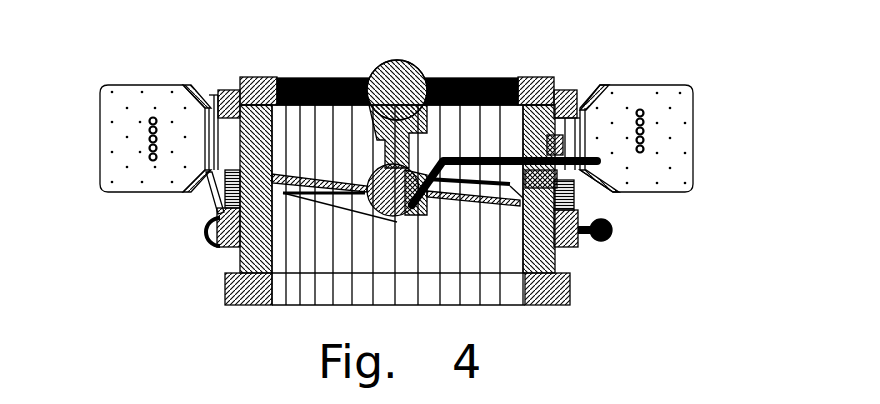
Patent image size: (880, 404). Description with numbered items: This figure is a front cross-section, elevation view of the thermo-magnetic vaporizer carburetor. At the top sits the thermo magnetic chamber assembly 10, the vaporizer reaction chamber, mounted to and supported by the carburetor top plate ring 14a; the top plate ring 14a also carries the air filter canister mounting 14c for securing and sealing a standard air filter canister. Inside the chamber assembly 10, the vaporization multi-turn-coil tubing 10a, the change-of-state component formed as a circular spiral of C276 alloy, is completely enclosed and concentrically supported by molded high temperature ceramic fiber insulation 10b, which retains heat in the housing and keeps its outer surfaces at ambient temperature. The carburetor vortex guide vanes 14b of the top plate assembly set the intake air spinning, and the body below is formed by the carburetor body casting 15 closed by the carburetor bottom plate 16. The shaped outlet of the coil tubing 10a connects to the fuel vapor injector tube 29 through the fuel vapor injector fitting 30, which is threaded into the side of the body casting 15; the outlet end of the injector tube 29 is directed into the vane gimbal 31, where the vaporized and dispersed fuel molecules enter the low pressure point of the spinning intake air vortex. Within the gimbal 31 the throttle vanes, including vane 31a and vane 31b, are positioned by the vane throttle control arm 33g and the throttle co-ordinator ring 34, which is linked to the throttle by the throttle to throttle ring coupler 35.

The thermo magnetic chamber assembly 10 is at (688, 84).
The multi-turn-coil tubing 10a is at (640, 108).
The high temperature ceramic fiber insulation 10b is at (677, 117).
The top plate ring 14a is at (543, 77).
The carburetor vortex guide vanes 14b is at (450, 77).
The air filter canister mounting 14c is at (377, 70).
The carburetor body casting 15 is at (614, 227).
The carburetor bottom plate 16 is at (562, 292).
The fuel vapor injector tube 29 is at (483, 77).
The fuel vapor injector fitting 30 is at (563, 143).
The vane gimbal 31 is at (377, 170).
The vane 1 31a is at (330, 177).
The vane 2 31b is at (467, 193).
The vane 1 throttle control arm 33g is at (207, 208).
The throttle co-ordinator ring 34 is at (618, 193).
The throttle to throttle ring coupler 35 is at (574, 208).